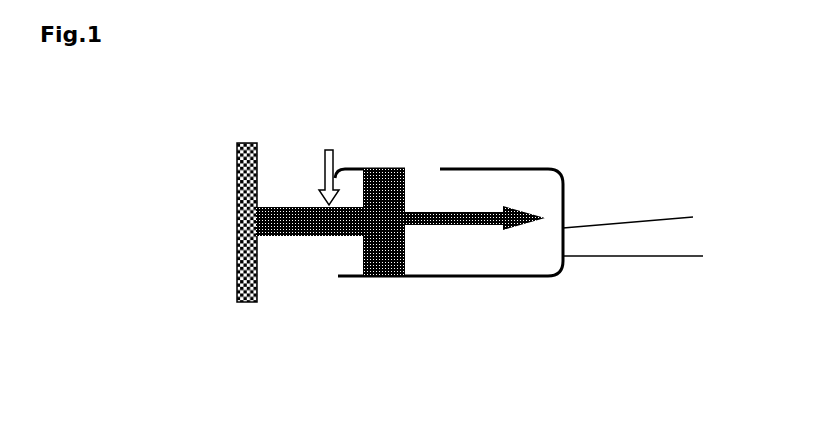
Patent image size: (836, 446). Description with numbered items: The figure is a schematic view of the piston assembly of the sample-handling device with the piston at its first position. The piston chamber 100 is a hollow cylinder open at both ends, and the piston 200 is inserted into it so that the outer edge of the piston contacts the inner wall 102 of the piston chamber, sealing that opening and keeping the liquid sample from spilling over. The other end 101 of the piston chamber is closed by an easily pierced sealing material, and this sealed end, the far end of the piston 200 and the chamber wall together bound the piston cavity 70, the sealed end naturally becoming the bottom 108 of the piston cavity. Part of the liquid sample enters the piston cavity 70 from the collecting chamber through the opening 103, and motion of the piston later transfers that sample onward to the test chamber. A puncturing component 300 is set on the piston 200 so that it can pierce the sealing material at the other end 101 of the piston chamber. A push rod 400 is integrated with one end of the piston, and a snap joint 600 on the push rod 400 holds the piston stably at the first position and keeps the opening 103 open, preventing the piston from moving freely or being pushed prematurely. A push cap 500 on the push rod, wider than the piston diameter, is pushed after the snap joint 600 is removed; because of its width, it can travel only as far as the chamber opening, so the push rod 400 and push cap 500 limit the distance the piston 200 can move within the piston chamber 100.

The piston cavity 70 is at (517, 255).
The piston chamber 100 is at (347, 180).
The other end of the piston chamber 101 is at (651, 218).
The inner wall of the piston chamber 102 is at (457, 170).
The opening 103 is at (421, 170).
The bottom of the piston cavity 108 is at (656, 261).
The piston 200 is at (400, 277).
The puncturing component 300 is at (460, 223).
The push rod 400 is at (288, 237).
The push cap 500 is at (237, 218).
The snap joint 600 is at (324, 178).